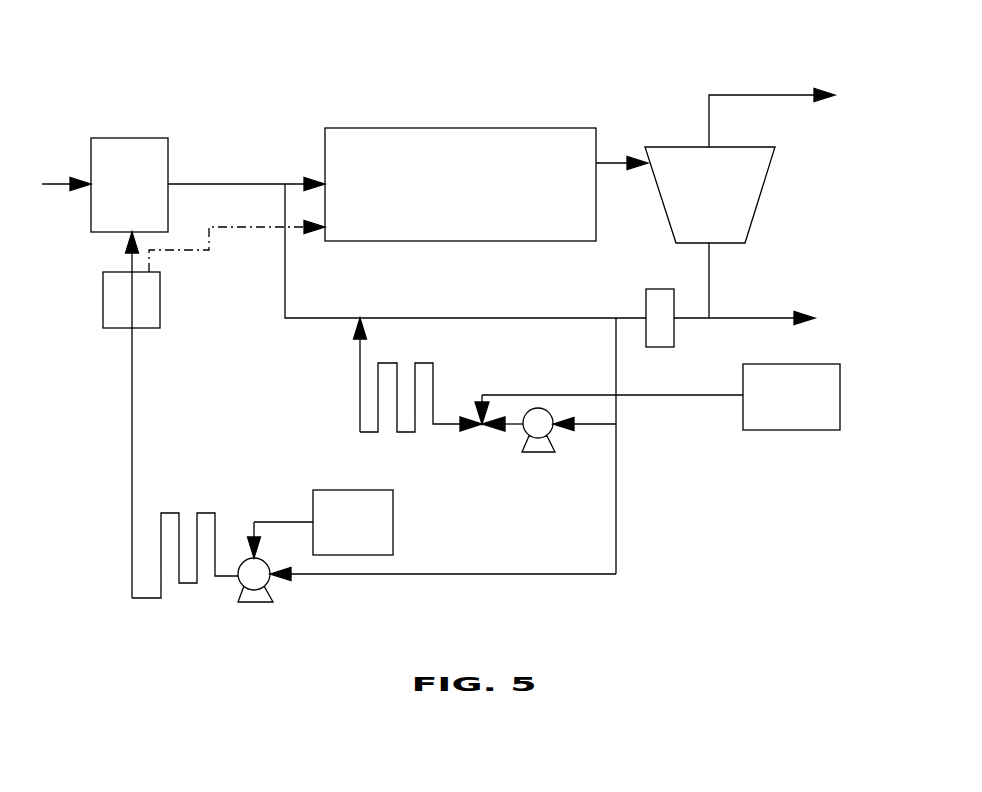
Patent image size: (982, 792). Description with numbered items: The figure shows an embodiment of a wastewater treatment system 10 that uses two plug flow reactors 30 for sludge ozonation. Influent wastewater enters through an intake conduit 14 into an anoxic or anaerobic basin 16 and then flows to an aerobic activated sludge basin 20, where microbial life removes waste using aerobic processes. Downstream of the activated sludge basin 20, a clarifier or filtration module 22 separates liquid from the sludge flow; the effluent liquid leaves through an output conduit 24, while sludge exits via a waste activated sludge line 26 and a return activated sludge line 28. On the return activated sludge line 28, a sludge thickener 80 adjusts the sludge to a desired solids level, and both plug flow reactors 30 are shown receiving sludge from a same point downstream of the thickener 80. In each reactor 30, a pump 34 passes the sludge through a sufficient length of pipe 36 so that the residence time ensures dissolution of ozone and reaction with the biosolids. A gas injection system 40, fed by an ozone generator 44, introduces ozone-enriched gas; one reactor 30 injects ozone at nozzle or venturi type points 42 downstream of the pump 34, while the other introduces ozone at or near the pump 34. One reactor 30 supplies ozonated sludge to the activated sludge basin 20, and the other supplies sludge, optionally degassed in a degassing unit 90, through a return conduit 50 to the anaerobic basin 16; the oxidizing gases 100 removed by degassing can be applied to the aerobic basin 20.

The wastewater treatment system 10 is at (205, 92).
The intake conduit 14 is at (236, 184).
The anoxic and/or anaerobic basin 16 is at (131, 138).
The activated sludge basin 20 is at (505, 128).
The clarifier or filtration module 22 is at (745, 190).
The output conduit 24 is at (757, 95).
The waste activated sludge line 26 is at (745, 316).
The return activated sludge line 28 is at (547, 317).
The plug flow reactor 30 is at (513, 483).
The pump 34 is at (542, 452).
The length of pipe 36 is at (387, 363).
The gas injection system 40 is at (691, 430).
The nozzle or venturi type device 42 is at (478, 432).
The ozone generator 44 is at (830, 395).
The return conduit 50 is at (133, 340).
The sludge thickener 80 is at (658, 289).
The degassing unit 90 is at (103, 299).
The oxidizing gases 100 is at (248, 229).